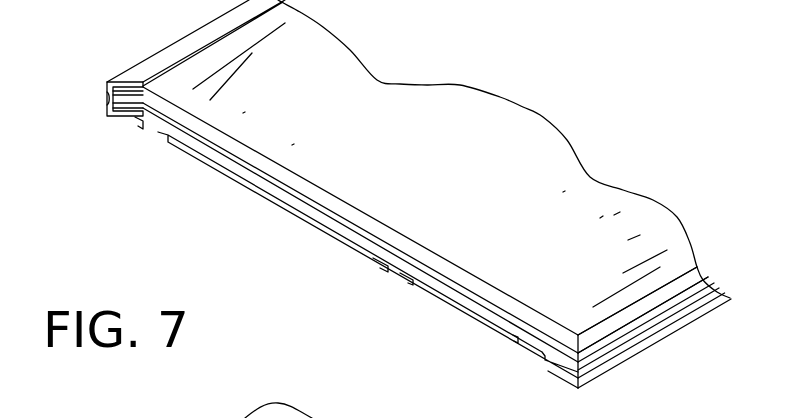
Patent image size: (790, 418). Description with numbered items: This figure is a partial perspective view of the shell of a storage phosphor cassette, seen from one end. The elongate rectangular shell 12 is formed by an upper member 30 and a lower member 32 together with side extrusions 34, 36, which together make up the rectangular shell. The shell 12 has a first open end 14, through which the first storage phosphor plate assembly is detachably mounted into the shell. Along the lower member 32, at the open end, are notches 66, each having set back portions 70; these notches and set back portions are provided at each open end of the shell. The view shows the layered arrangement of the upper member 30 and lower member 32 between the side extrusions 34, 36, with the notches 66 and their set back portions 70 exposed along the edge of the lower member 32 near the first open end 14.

The shell 12 is at (558, 107).
The first open end 14 is at (232, 194).
The upper member 30 is at (377, 82).
The lower member 32 is at (566, 371).
The side extrusion 34 is at (660, 337).
The side extrusion 36 is at (134, 78).
The notches 66 is at (152, 131).
The set back portions 70 is at (380, 261).